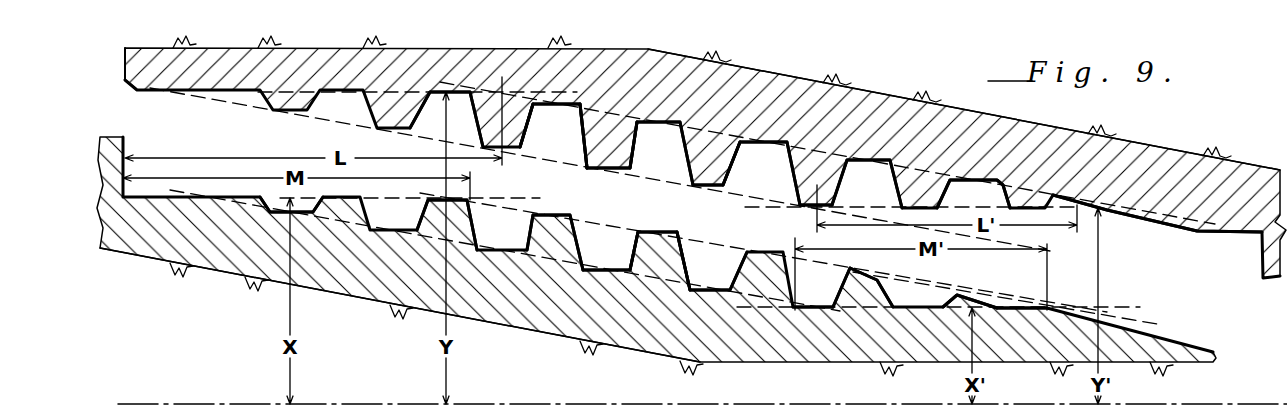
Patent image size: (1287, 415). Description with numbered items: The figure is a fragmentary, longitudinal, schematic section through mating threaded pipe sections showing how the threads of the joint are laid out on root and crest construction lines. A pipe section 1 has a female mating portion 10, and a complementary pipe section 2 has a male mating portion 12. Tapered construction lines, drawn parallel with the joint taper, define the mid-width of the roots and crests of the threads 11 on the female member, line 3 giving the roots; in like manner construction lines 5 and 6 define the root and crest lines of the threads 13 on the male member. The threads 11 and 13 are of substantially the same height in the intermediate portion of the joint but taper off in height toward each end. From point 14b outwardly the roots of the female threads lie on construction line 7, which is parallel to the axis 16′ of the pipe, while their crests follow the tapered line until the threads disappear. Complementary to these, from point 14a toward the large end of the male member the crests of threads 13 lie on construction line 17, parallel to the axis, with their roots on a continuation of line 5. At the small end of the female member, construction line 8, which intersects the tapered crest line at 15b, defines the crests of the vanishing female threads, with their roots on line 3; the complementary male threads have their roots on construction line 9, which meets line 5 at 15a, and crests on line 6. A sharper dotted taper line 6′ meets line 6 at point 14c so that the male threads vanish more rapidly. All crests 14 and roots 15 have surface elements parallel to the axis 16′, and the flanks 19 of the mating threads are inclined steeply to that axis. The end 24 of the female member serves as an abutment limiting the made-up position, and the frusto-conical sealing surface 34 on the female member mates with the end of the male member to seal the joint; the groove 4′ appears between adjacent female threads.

The pipe section 1 is at (1193, 152).
The complementary pipe section 2 is at (157, 243).
The construction line 3 is at (832, 155).
The thread groove 4′ is at (616, 161).
The construction line 5 is at (556, 262).
The construction line 6 is at (716, 246).
The construction line 6′ is at (1010, 306).
The construction line 7 is at (409, 90).
The construction line 8 is at (982, 206).
The construction line 9 is at (955, 300).
The female mating portion 10 is at (890, 102).
The threads 11 is at (710, 160).
The male mating portion 12 is at (586, 327).
The threads 13 is at (660, 250).
The crests 14 is at (712, 188).
The point 14a is at (472, 200).
The point 14b is at (570, 70).
The point 14c is at (852, 268).
The roots 15 is at (760, 144).
The point 15a is at (793, 308).
The point 15b is at (811, 231).
The axis 16′ is at (347, 403).
The construction line 17 is at (277, 198).
The flanks 19 is at (583, 136).
The end 24 is at (123, 78).
The frusto-conical sealing surface 34 is at (1156, 222).